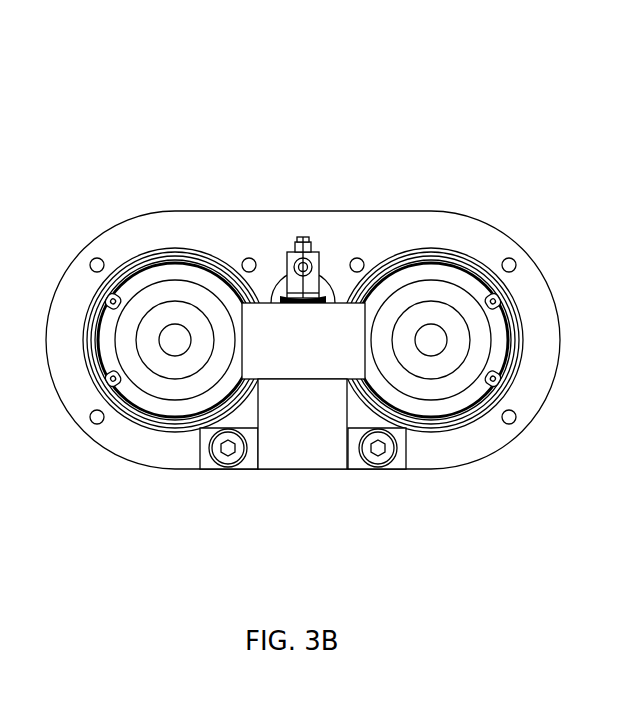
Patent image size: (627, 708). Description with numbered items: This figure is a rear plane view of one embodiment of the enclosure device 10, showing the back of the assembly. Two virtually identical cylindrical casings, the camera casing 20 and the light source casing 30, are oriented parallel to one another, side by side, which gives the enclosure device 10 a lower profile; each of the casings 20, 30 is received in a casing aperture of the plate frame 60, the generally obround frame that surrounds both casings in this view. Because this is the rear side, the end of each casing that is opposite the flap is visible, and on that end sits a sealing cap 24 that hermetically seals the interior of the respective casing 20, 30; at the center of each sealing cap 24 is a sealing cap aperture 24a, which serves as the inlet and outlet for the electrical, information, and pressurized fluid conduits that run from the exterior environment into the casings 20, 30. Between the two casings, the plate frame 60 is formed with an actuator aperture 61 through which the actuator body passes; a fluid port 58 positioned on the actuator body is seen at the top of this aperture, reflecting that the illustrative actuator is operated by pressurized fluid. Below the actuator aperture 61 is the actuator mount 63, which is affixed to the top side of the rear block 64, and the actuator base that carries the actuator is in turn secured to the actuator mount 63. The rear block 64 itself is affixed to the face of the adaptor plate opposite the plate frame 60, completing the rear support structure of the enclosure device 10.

The enclosure device 10 is at (312, 127).
The camera casing 20 is at (447, 433).
The sealing cap 24 is at (145, 380).
The sealing cap aperture 24a is at (175, 348).
The light source casing 30 is at (82, 323).
The fluid port 58 is at (313, 242).
The plate frame 60 is at (443, 224).
The actuator aperture 61 is at (275, 280).
The actuator mount 63 is at (317, 345).
The rear block 64 is at (317, 444).